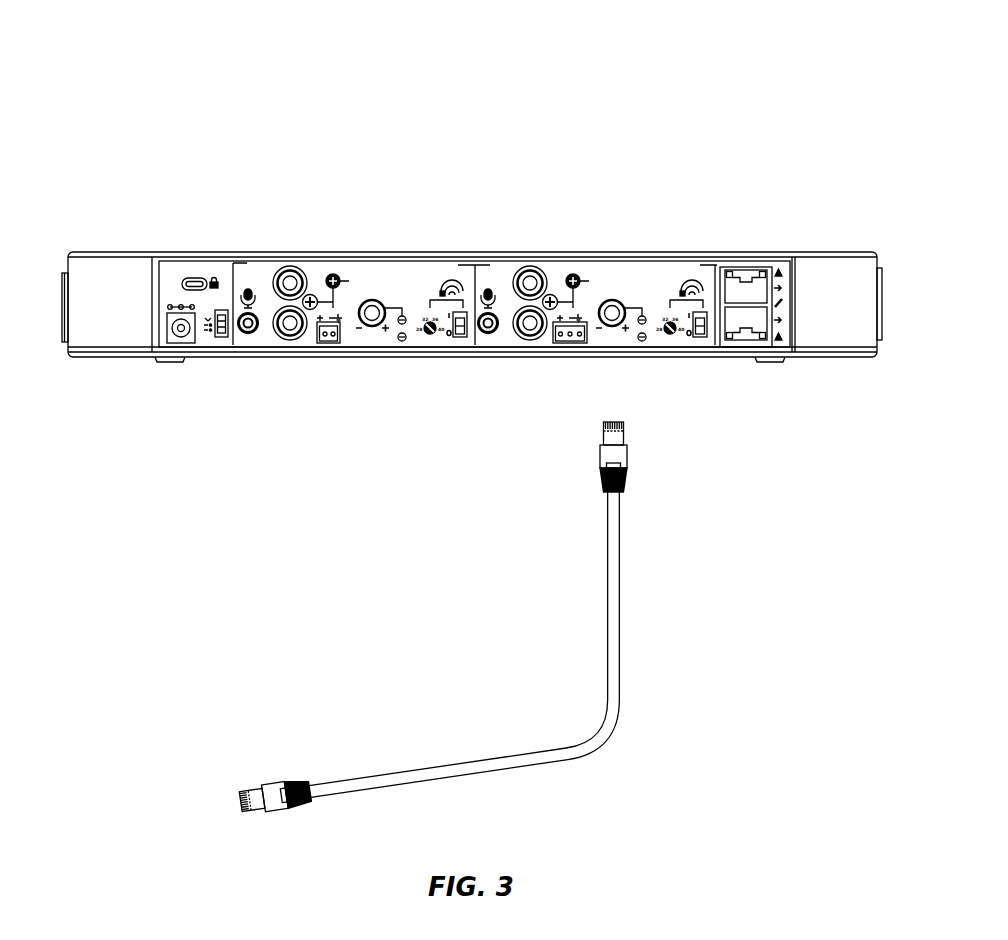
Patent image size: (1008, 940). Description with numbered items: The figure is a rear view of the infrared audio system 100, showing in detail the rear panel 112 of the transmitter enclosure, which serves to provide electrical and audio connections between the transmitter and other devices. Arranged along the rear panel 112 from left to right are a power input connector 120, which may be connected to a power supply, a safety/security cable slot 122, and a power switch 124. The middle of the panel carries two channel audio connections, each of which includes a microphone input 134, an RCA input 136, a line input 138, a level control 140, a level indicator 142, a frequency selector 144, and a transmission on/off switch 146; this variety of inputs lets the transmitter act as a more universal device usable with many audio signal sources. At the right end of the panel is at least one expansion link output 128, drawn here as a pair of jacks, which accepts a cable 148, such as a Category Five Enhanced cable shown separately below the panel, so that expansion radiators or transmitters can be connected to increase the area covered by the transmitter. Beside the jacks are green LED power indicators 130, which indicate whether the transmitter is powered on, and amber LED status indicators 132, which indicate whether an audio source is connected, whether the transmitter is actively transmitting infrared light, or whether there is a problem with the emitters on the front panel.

The infrared audio system 100 is at (470, 100).
The rear panel 112 is at (169, 268).
The power input connector 120 is at (175, 330).
The safety/security cable slot 122 is at (193, 276).
The power switch 124 is at (222, 311).
The expansion link output 128 is at (745, 285).
The green LED power indicators 130 is at (728, 272).
The amber LED status indicators 132 is at (770, 268).
The microphone input 134 is at (252, 333).
The RCA input 136 is at (288, 340).
The line input 138 is at (328, 343).
The level control 140 is at (374, 327).
The level indicator 142 is at (402, 341).
The frequency selector 144 is at (430, 335).
The transmission on/off switch 146 is at (460, 338).
The cable 148 is at (608, 565).